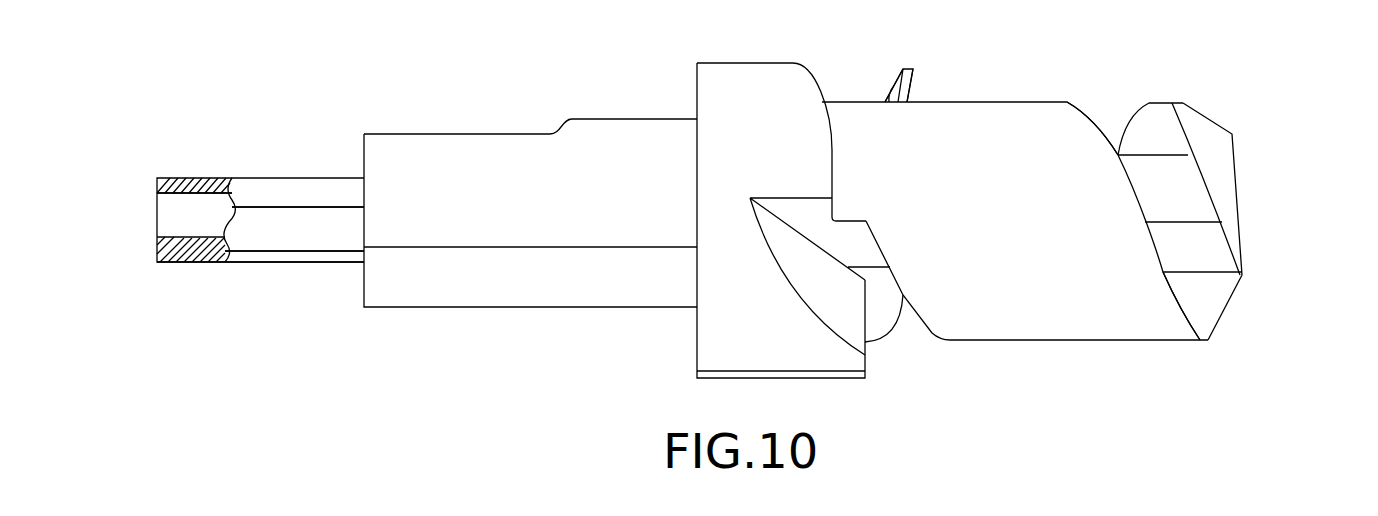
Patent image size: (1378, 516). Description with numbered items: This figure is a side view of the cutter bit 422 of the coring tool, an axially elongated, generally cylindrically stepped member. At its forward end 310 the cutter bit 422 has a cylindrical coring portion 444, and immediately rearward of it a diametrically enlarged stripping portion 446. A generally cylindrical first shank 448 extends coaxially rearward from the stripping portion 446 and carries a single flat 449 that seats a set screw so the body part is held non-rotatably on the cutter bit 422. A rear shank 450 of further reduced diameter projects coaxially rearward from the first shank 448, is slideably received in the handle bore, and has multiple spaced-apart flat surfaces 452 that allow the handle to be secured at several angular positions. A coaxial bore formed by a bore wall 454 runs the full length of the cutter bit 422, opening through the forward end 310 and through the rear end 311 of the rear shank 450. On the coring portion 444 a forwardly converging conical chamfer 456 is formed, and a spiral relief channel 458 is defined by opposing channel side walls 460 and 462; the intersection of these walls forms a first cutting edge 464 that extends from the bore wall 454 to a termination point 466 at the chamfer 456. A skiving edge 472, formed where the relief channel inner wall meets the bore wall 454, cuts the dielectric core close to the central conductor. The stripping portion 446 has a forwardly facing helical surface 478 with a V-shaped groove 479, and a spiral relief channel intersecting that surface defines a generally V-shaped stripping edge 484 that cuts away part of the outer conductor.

The forward end 310 is at (1272, 176).
The rear end 311 is at (132, 204).
The cutter bit 422 is at (396, 328).
The coring portion 444 is at (1047, 341).
The stripping portion 446 is at (718, 337).
The first shank 448 is at (479, 286).
The flat 449 is at (424, 133).
The rear shank 450 is at (233, 263).
The flat surface 452 is at (285, 178).
The bore wall 454 is at (205, 198).
The conical chamfer 456 is at (1227, 153).
The spiral relief channel 458 is at (1110, 108).
The channel side wall 460 is at (1155, 137).
The channel side wall 462 is at (1203, 323).
The first cutting edge 464 is at (1240, 290).
The termination point 466 is at (1237, 293).
The skiving edge 472 is at (1190, 223).
The helical surface 478 is at (913, 70).
The groove 479 is at (913, 92).
The stripping edge 484 is at (891, 93).